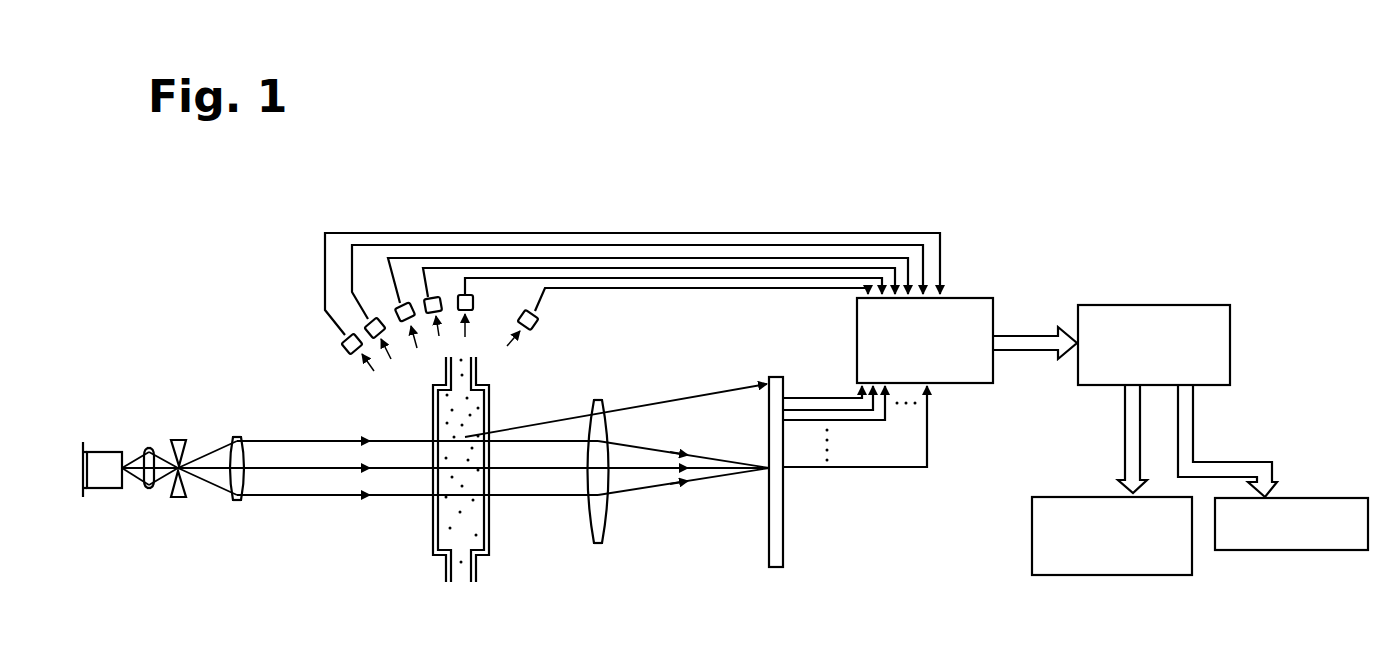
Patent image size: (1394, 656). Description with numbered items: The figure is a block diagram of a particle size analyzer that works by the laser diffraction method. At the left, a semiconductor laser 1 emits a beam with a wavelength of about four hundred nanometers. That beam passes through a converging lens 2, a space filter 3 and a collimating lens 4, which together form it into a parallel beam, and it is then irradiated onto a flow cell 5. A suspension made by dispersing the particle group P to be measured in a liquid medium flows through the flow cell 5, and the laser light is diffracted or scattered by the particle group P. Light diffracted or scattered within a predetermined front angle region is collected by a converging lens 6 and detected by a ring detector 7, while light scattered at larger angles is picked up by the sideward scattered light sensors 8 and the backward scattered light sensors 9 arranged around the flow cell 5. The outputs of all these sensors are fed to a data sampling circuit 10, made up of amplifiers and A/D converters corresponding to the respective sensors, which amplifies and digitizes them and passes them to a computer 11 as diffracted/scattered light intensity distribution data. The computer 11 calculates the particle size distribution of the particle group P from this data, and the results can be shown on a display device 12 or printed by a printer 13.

The semiconductor laser 1 is at (102, 458).
The converging lens 2 is at (146, 488).
The space filter 3 is at (179, 440).
The collimating lens 4 is at (237, 500).
The flow cell 5 is at (433, 540).
The particle group P is at (465, 530).
The converging lens 6 is at (598, 543).
The ring detector 7 is at (776, 567).
The sideward scattered light sensor 8 is at (474, 303).
The backward scattered light sensor 9 is at (378, 314).
The data sampling circuit 10 is at (982, 307).
The computer 11 is at (1177, 401).
The display device 12 is at (1112, 536).
The printer 13 is at (1291, 524).